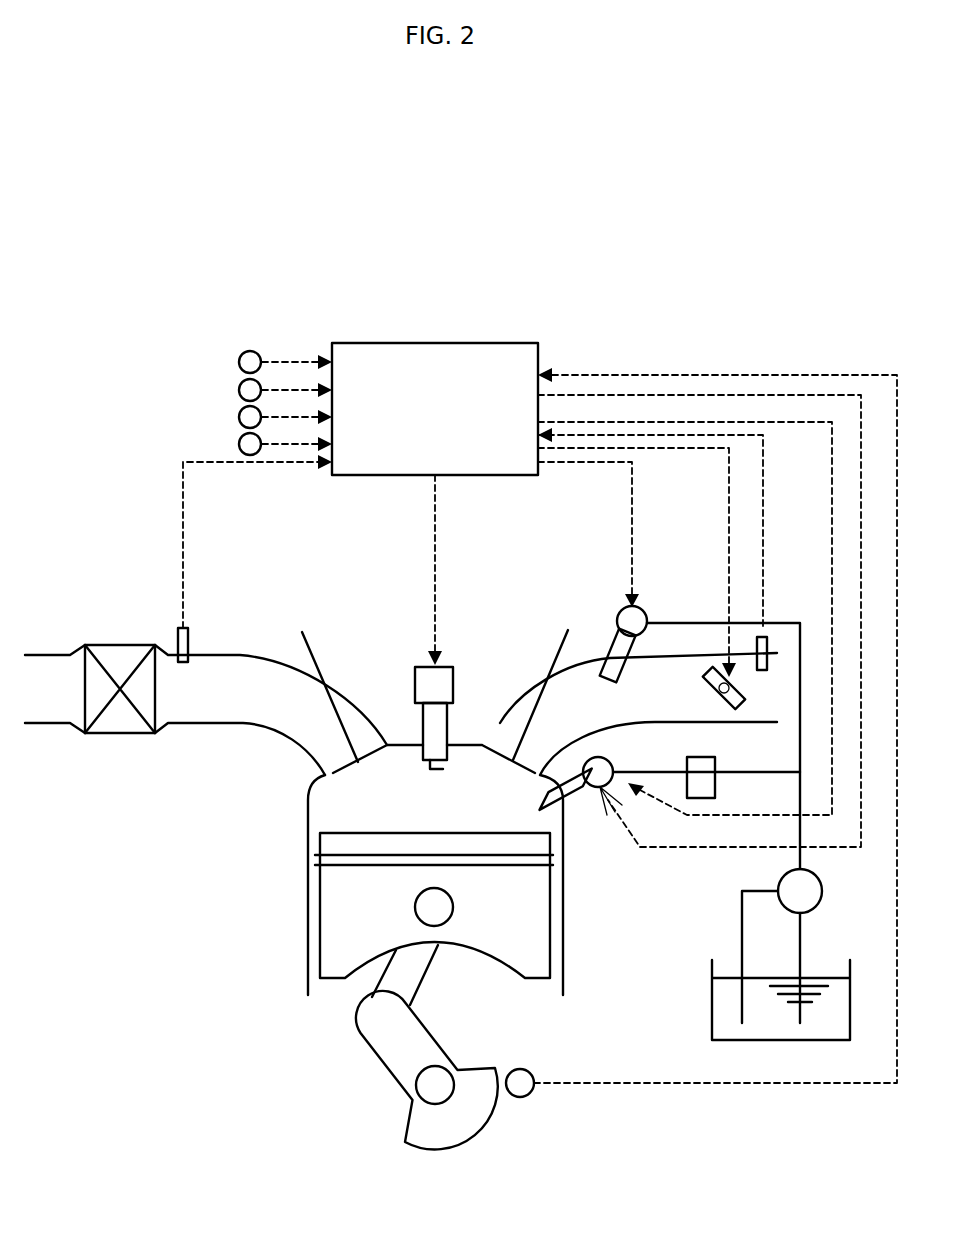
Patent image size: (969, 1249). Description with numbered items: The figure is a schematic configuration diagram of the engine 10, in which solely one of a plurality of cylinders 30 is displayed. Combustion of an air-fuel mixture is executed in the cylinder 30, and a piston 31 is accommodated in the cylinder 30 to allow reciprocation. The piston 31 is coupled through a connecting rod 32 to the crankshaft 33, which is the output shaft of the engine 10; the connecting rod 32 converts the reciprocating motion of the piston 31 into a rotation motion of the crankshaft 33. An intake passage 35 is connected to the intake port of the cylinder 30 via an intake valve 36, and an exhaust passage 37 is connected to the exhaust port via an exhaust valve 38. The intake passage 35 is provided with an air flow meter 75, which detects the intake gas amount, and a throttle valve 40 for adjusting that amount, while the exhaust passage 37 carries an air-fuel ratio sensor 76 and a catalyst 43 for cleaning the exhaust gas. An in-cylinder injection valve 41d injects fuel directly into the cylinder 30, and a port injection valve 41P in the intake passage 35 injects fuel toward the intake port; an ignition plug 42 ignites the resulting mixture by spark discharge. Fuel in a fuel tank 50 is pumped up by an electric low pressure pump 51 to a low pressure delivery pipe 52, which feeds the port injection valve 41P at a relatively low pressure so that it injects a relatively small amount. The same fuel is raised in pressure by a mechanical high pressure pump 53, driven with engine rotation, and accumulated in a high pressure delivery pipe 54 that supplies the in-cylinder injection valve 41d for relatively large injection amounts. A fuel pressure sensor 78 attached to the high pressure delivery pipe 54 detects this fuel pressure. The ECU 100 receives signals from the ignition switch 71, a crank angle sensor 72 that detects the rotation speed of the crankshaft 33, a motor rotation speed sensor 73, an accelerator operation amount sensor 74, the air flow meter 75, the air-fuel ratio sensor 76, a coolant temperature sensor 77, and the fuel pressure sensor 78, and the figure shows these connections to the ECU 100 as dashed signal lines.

The engine 10 is at (204, 886).
The cylinder 30 is at (382, 820).
The piston 31 is at (330, 902).
The connecting rod 32 is at (429, 978).
The crankshaft 33 is at (432, 1085).
The intake passage 35 is at (746, 722).
The intake valve 36 is at (547, 680).
The exhaust passage 37 is at (254, 722).
The exhaust valve 38 is at (318, 670).
The throttle valve 40 is at (738, 690).
The port injection valve 41P is at (604, 640).
The in-cylinder injection valve 41d is at (540, 800).
The ignition plug 42 is at (453, 685).
The catalyst 43 is at (122, 645).
The fuel tank 50 is at (712, 1020).
The low pressure pump 51 is at (823, 891).
The low pressure delivery pipe 52 is at (643, 614).
The high pressure pump 53 is at (716, 785).
The high pressure delivery pipe 54 is at (614, 768).
The ignition switch 71 is at (237, 362).
The crank angle sensor 72 is at (520, 1072).
The motor rotation speed sensor 73 is at (237, 390).
The accelerator operation amount sensor 74 is at (237, 417).
The air flow meter 75 is at (770, 650).
The air-fuel ratio sensor 76 is at (190, 640).
The coolant temperature sensor 77 is at (237, 444).
The fuel pressure sensor 78 is at (636, 800).
The ECU 100 is at (484, 343).